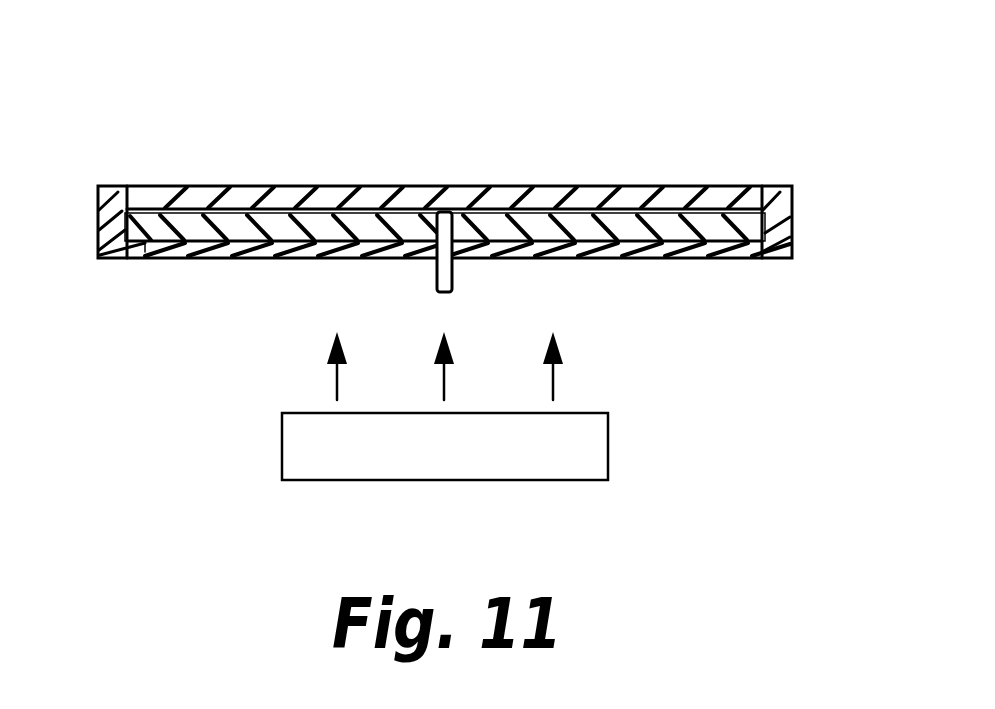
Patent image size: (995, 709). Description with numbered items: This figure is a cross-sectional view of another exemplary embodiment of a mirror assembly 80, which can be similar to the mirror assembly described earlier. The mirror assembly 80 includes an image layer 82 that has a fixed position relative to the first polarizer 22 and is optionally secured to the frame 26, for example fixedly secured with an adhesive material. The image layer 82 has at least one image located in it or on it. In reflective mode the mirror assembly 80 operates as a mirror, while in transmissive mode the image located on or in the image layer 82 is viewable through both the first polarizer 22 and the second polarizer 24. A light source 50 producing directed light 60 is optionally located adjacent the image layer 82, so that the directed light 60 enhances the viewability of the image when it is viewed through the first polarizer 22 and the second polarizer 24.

The mirror assembly 80 is at (770, 108).
The first polarizer 22 is at (548, 187).
The second polarizer 24 is at (598, 232).
The frame 26 is at (110, 208).
The image layer 82 is at (687, 258).
The light source 50 is at (593, 447).
The directed light 60 is at (337, 380).